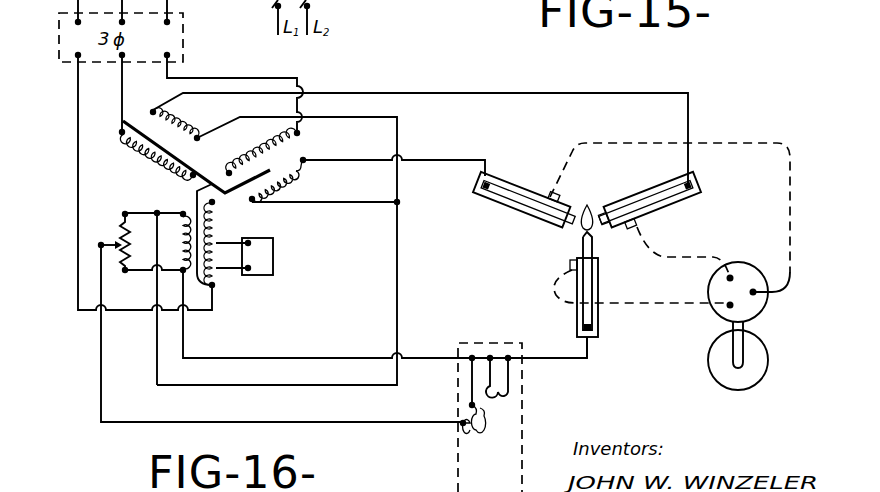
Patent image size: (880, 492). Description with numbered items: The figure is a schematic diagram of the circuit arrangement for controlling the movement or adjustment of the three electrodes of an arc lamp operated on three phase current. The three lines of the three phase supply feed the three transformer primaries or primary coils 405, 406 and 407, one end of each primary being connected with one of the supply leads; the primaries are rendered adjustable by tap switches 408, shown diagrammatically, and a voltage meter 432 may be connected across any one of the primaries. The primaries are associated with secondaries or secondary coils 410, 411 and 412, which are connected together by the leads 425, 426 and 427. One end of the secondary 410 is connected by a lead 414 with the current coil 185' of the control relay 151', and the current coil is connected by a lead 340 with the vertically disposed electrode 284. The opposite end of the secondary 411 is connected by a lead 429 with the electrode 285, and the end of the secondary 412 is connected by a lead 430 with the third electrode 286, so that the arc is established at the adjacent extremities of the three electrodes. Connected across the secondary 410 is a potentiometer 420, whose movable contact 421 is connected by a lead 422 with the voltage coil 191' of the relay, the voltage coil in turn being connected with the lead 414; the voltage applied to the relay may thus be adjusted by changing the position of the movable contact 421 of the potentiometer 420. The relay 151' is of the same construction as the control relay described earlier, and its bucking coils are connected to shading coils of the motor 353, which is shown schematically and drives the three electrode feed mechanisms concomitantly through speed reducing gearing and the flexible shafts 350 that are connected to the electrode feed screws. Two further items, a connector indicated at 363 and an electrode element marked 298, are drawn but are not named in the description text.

The tap switches 408 is at (122, 122).
The primary coil 406 is at (150, 158).
The secondary coil 411 is at (184, 121).
The primary coil 407 is at (266, 146).
The secondary coil 412 is at (295, 179).
The primary coil 405 is at (217, 219).
The voltage meter 432 is at (273, 265).
The secondary coil 410 is at (186, 213).
The potentiometer 420 is at (121, 230).
The movable contact 421 is at (111, 248).
The lead 422 is at (174, 422).
The lead 425 is at (281, 385).
The lead 426 is at (343, 117).
The lead 427 is at (305, 205).
The lead 429 is at (452, 93).
The lead 430 is at (427, 160).
The lead 414 is at (276, 358).
The lead 340 is at (571, 354).
The electrode 298 is at (505, 181).
The electrode 286 is at (510, 193).
The electrode 285 is at (603, 208).
The electrode 284 is at (595, 247).
The flexible shafts 350 is at (720, 143).
The connector plug 363 is at (710, 283).
The motor 353 is at (708, 358).
The current coil 185' is at (532, 378).
The voltage coil 191' is at (444, 394).
The control relay 151' is at (460, 417).